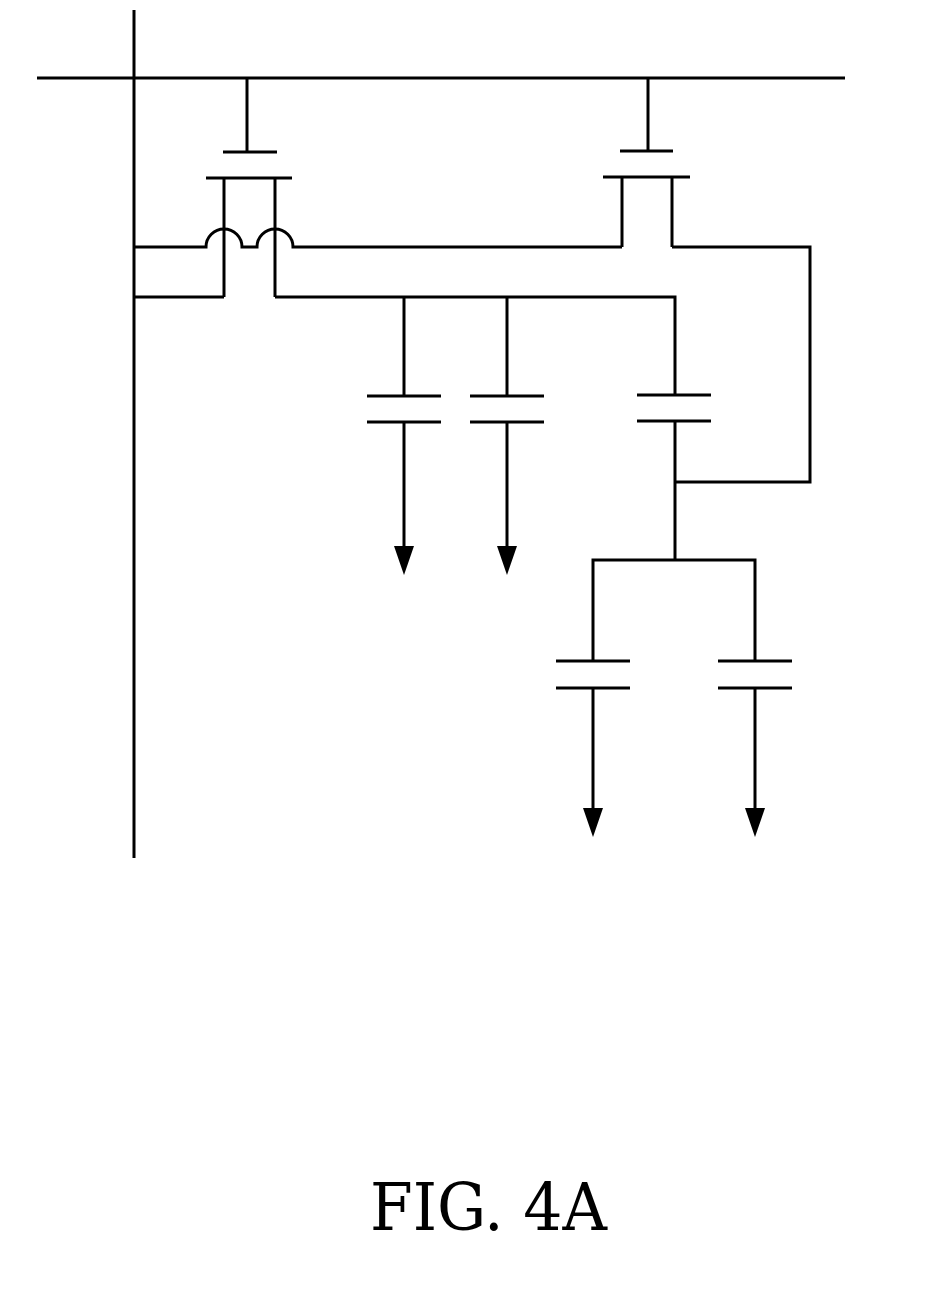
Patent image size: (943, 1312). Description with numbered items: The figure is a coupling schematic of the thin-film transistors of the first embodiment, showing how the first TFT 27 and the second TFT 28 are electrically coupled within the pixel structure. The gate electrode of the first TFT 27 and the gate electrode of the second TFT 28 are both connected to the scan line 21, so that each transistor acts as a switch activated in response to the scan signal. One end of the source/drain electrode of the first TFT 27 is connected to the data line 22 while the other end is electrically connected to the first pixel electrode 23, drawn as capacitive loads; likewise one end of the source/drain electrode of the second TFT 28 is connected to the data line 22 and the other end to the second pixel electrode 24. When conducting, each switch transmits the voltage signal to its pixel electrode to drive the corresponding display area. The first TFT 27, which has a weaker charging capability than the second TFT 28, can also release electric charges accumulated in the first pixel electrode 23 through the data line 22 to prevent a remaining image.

The scan line 21 is at (402, 78).
The data line 22 is at (134, 772).
The first pixel electrode 23 is at (404, 396).
The second pixel electrode 24 is at (594, 655).
The first TFT 27 is at (306, 198).
The second TFT 28 is at (711, 196).